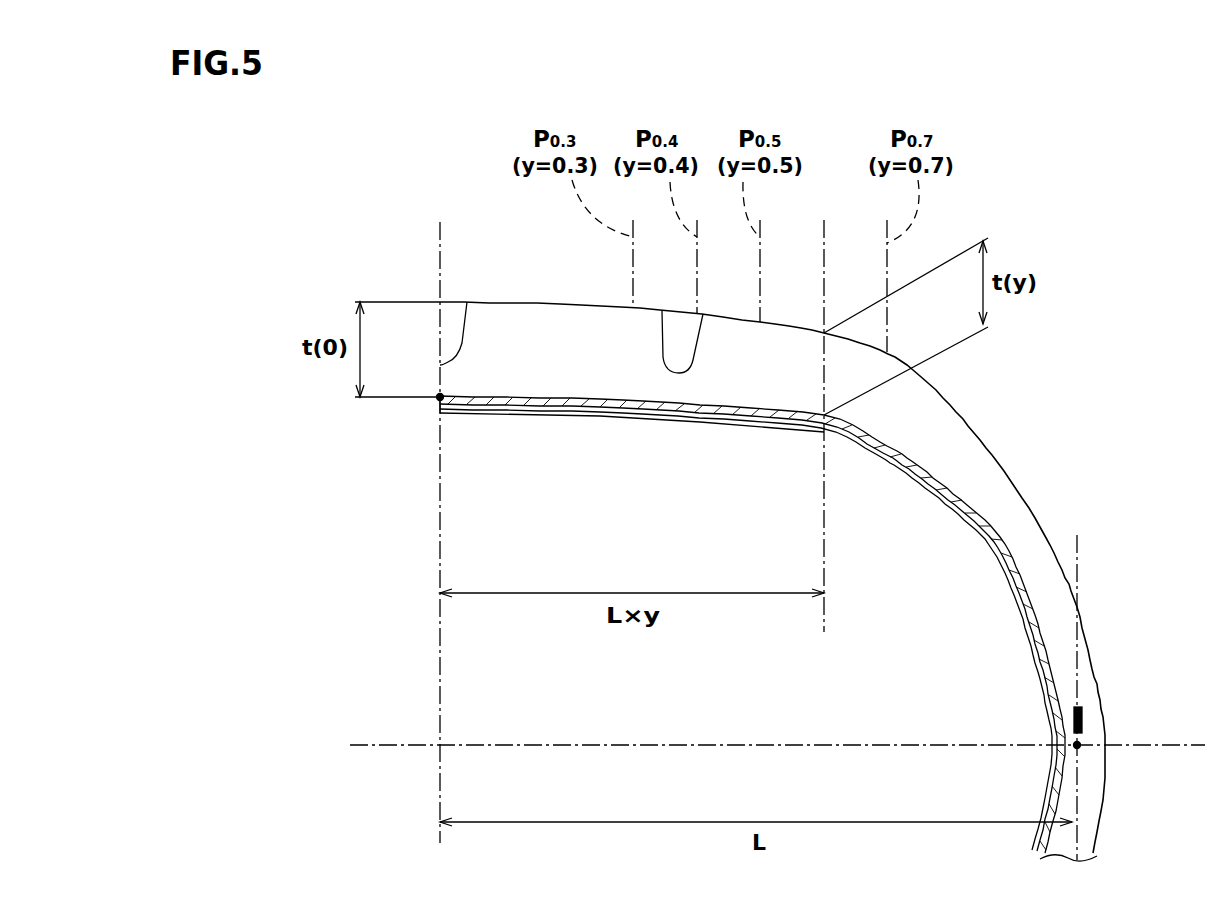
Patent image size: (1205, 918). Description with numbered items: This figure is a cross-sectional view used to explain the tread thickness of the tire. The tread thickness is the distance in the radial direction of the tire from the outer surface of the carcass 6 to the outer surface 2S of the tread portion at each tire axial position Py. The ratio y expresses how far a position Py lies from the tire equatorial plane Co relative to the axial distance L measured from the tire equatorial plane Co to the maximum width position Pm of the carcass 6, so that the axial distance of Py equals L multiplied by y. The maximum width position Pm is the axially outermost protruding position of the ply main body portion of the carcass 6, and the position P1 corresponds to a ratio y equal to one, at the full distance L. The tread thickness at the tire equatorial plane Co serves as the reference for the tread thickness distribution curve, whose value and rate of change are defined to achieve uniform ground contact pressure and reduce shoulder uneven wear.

The outer surface of the tread portion 2S is at (557, 302).
The carcass 6 is at (1000, 538).
The tire equatorial plane Co is at (447, 525).
The tire axial position Py is at (826, 410).
The tire axial position at y=1 P1 is at (1079, 668).
The maximum width position of the carcass Pm is at (1077, 745).